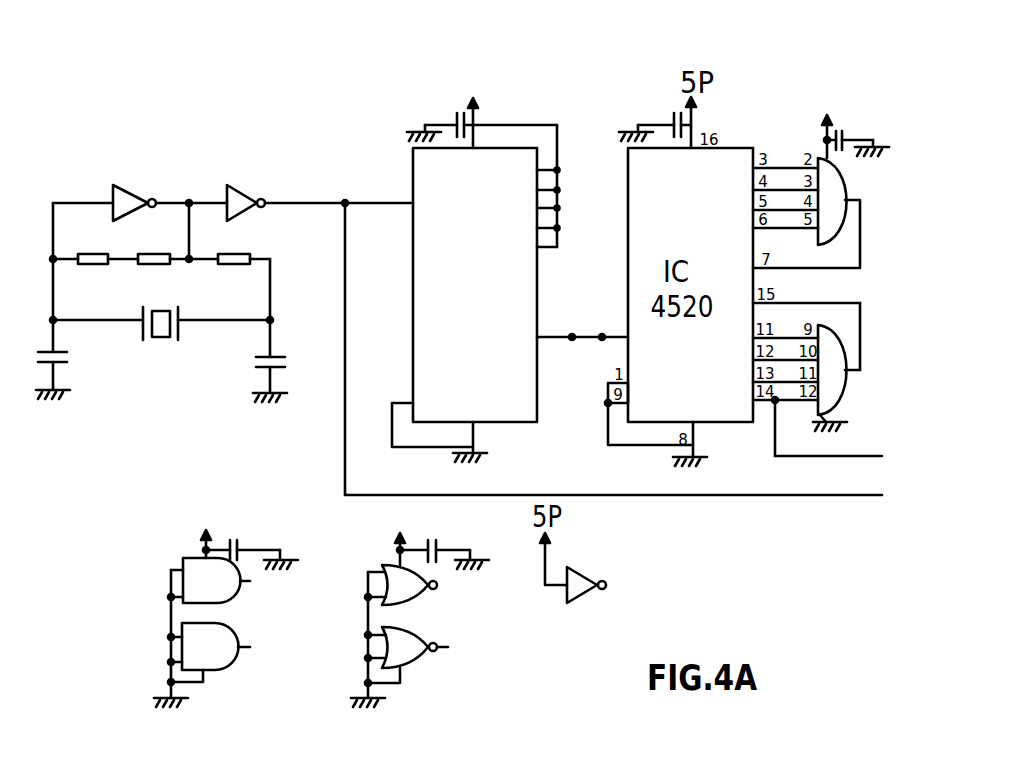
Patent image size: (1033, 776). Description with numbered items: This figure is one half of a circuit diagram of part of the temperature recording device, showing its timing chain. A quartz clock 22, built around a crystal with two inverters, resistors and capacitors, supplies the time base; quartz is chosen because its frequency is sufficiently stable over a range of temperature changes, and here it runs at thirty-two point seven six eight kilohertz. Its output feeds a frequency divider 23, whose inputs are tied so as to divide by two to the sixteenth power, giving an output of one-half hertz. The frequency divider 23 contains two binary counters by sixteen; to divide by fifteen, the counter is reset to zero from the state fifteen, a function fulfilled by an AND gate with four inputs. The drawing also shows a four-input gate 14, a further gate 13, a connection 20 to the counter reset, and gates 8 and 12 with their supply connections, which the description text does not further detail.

The quartz clock 22 is at (135, 170).
The frequency divider 23 is at (486, 263).
The reset line 20 is at (765, 240).
The four-input NAND gate 14 is at (849, 155).
The four-input NAND gate 13 is at (853, 357).
The AND gate 8 is at (226, 598).
The NOR gate 12 is at (420, 603).